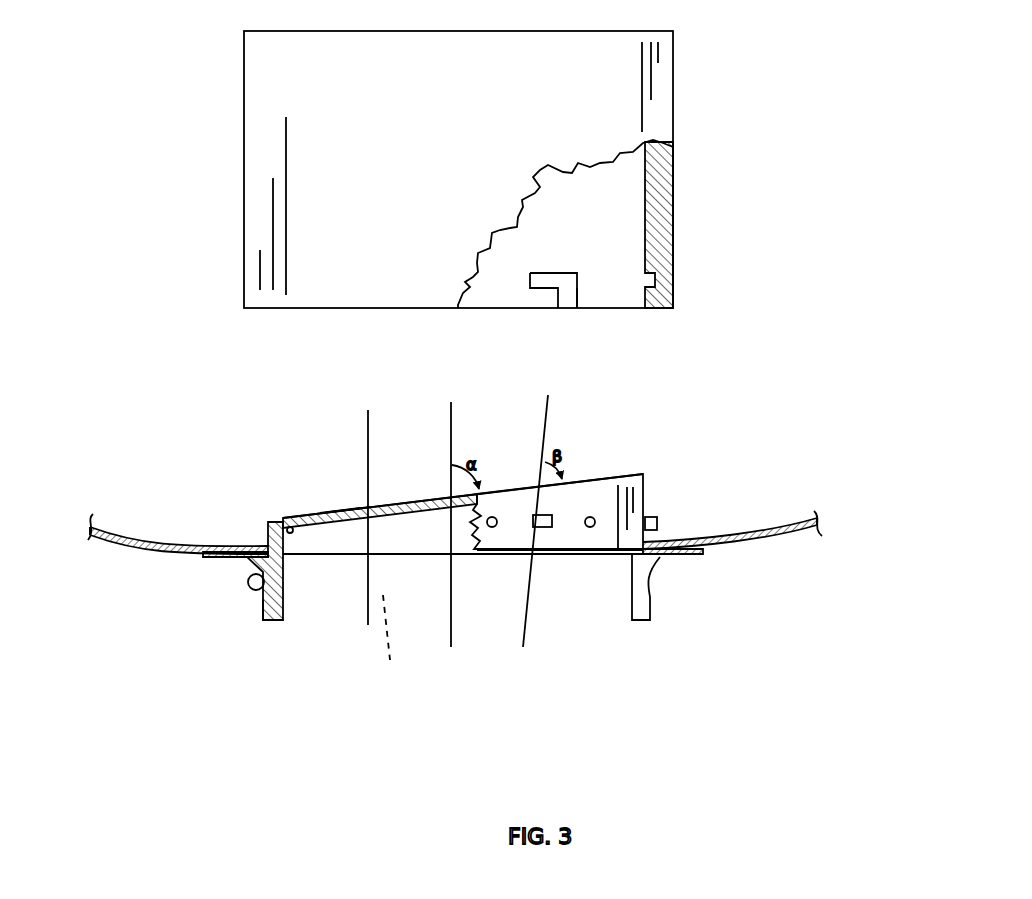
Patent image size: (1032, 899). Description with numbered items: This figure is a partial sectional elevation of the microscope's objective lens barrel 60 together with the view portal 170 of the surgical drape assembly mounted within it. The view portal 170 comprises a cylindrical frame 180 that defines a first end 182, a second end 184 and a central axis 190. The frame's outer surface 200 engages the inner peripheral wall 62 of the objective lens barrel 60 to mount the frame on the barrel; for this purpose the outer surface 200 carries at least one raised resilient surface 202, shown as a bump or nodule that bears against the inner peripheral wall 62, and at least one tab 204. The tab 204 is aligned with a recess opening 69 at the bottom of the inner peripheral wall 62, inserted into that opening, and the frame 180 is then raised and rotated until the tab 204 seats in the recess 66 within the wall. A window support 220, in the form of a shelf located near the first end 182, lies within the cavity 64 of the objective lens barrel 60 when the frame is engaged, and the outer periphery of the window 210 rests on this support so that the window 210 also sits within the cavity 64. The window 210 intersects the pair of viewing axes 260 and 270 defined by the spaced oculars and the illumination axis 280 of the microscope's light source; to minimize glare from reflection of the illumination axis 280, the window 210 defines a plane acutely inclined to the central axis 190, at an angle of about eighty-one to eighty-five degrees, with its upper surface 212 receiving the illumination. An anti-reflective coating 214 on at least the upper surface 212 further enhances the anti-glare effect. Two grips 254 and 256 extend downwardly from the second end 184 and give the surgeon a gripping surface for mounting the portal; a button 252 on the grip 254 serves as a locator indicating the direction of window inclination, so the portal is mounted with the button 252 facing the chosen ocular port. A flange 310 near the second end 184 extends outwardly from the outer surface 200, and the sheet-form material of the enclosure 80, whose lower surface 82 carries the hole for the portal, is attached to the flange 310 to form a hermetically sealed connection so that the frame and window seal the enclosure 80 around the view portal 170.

The objective lens barrel 60 is at (702, 58).
The inner peripheral wall 62 is at (641, 300).
The cavity 64 is at (502, 284).
The recess 66 is at (543, 285).
The recess opening 69 is at (567, 300).
The view portal 170 is at (741, 425).
The cylindrical frame 180 is at (665, 482).
The first end 182 is at (263, 508).
The second end 184 is at (654, 535).
The central axis 190 is at (451, 628).
The outer surface 200 is at (645, 503).
The raised resilient surface 202 is at (597, 518).
The tab 204 is at (548, 513).
The window 210 is at (306, 508).
The upper surface 212 is at (347, 505).
The anti-reflective coating 214 is at (355, 500).
The window support 220 is at (292, 533).
The button 252 is at (250, 591).
The grip 254 is at (270, 621).
The grip 256 is at (640, 620).
The viewing axis 260 is at (370, 612).
The viewing axis 270 is at (394, 644).
The illumination axis 280 is at (528, 620).
The flange 310 is at (220, 557).
The enclosure 80 is at (125, 526).
The lower surface 82 is at (117, 541).